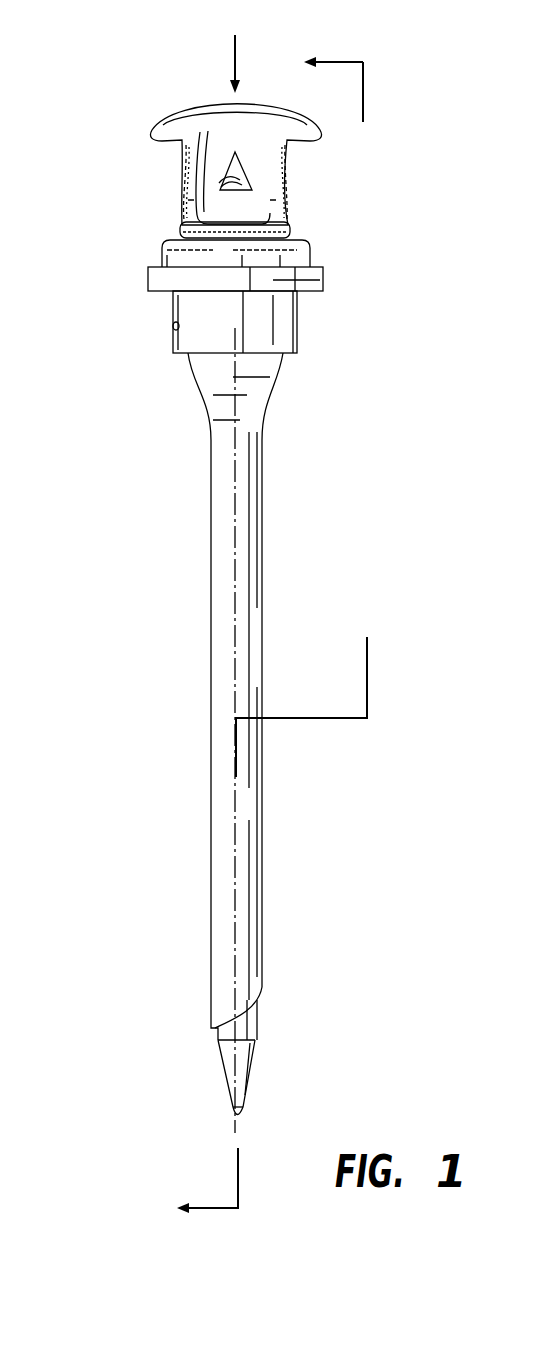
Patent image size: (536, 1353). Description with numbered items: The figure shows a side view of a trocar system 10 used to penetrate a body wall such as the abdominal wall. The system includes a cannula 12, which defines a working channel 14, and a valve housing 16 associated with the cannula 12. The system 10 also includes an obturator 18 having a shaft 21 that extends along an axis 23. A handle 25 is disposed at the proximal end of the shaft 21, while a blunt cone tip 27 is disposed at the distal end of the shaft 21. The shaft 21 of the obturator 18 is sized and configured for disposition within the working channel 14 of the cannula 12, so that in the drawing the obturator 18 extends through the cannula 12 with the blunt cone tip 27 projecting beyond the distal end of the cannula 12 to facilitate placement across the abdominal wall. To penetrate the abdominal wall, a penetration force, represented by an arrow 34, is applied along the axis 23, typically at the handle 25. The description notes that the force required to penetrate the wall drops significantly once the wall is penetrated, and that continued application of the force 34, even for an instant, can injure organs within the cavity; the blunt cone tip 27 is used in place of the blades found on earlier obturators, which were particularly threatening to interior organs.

The trocar system 10 is at (172, 712).
The cannula 12 is at (263, 865).
The working channel 14 is at (218, 372).
The valve housing 16 is at (298, 308).
The obturator 18 is at (142, 106).
The shaft 21 is at (257, 1022).
The axis 23 is at (237, 593).
The handle 25 is at (283, 178).
The blunt cone tip 27 is at (248, 1095).
The arrow representing penetration force 34 is at (233, 63).